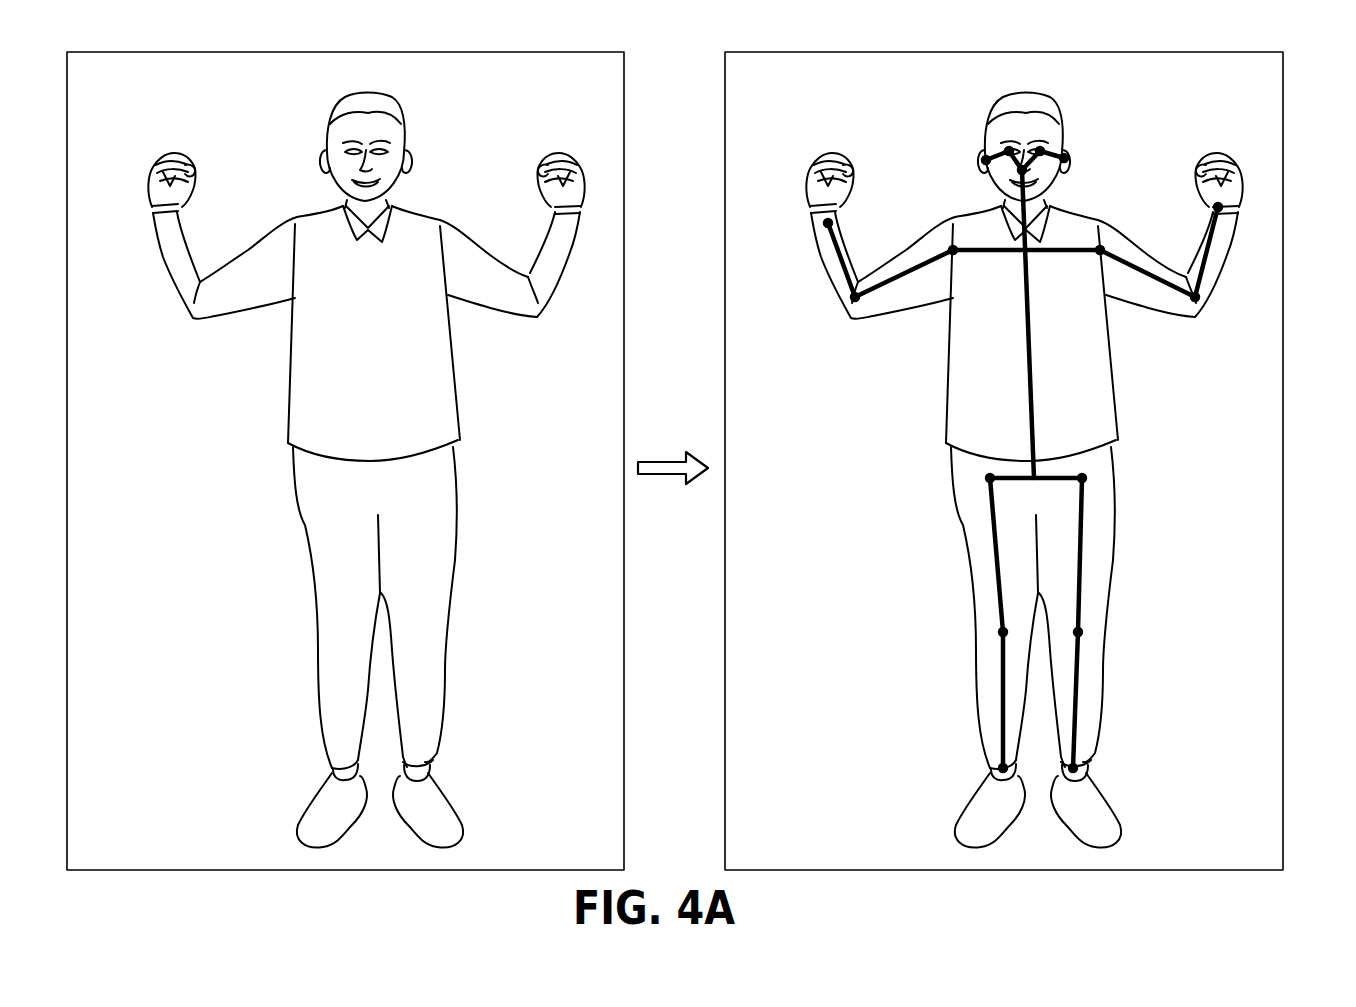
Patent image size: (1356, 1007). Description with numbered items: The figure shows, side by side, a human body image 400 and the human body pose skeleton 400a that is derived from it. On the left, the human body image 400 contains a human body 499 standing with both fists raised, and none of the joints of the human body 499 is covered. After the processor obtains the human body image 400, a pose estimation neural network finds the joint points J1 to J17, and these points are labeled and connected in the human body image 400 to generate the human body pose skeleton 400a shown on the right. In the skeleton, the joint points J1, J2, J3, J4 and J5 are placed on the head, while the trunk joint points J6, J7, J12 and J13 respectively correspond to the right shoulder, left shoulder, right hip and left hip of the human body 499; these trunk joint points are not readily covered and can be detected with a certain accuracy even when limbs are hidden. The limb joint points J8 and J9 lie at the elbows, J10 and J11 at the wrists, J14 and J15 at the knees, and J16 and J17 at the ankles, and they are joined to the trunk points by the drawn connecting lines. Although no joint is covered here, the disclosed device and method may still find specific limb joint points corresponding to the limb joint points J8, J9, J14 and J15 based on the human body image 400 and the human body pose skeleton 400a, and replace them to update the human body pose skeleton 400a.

The human body image 400 is at (253, 848).
The human body pose skeleton 400a is at (918, 848).
The human body 499 is at (360, 128).
The joint point J1 is at (1026, 172).
The joint point J2 is at (1007, 150).
The joint point J3 is at (1042, 150).
The joint point J4 is at (985, 159).
The joint point J5 is at (1066, 158).
The joint point J6 is at (1025, 238).
The joint point J7 is at (1132, 260).
The joint point J8 is at (902, 285).
The joint point J9 is at (1198, 297).
The joint point J10 is at (831, 223).
The joint point J11 is at (1222, 207).
The joint point J12 is at (1018, 544).
The joint point J13 is at (1095, 541).
The joint point J14 is at (1000, 632).
The joint point J15 is at (1080, 632).
The joint point J16 is at (1003, 768).
The joint point J17 is at (1075, 768).